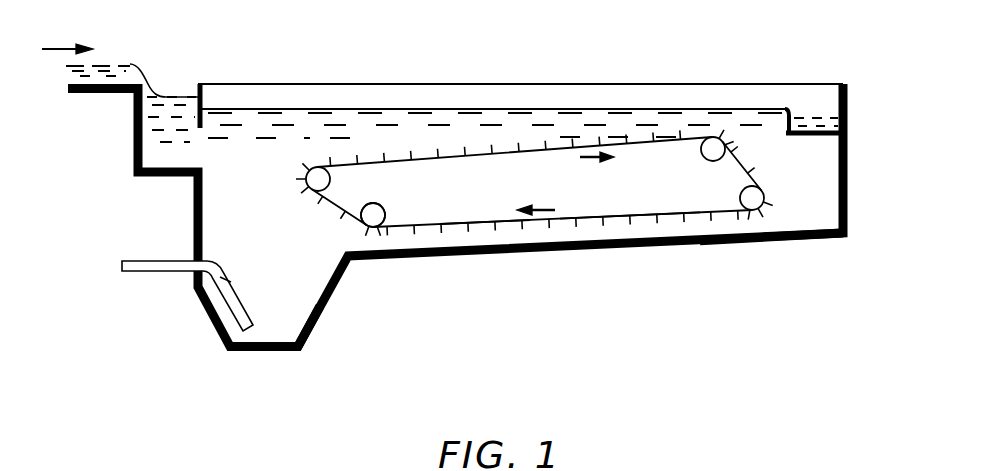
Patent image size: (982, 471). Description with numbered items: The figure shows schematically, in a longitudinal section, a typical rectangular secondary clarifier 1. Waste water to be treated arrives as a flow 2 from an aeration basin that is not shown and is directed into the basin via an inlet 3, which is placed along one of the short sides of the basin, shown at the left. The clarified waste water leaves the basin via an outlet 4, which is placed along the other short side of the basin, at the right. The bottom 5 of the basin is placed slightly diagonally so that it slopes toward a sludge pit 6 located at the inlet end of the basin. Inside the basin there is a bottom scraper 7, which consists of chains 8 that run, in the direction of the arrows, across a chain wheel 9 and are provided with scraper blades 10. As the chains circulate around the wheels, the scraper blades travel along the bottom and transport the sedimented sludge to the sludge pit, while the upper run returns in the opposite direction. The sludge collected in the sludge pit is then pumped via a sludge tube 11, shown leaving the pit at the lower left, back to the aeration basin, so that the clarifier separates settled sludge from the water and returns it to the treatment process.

The rectangular secondary clarifier 1 is at (586, 72).
The flow 2 is at (130, 64).
The inlet 3 is at (173, 110).
The outlet 4 is at (807, 117).
The bottom 5 is at (782, 231).
The sludge pit 6 is at (290, 310).
The bottom scraper 7 is at (457, 205).
The chains 8 is at (612, 216).
The chain wheel 9 is at (375, 218).
The scraper blades 10 is at (493, 224).
The sludge tube 11 is at (148, 270).